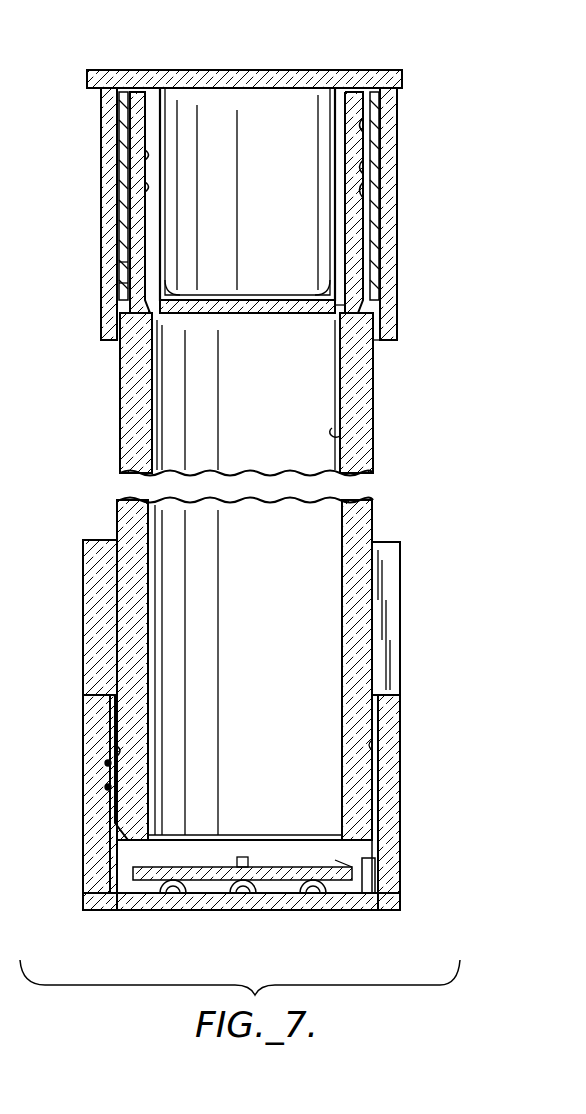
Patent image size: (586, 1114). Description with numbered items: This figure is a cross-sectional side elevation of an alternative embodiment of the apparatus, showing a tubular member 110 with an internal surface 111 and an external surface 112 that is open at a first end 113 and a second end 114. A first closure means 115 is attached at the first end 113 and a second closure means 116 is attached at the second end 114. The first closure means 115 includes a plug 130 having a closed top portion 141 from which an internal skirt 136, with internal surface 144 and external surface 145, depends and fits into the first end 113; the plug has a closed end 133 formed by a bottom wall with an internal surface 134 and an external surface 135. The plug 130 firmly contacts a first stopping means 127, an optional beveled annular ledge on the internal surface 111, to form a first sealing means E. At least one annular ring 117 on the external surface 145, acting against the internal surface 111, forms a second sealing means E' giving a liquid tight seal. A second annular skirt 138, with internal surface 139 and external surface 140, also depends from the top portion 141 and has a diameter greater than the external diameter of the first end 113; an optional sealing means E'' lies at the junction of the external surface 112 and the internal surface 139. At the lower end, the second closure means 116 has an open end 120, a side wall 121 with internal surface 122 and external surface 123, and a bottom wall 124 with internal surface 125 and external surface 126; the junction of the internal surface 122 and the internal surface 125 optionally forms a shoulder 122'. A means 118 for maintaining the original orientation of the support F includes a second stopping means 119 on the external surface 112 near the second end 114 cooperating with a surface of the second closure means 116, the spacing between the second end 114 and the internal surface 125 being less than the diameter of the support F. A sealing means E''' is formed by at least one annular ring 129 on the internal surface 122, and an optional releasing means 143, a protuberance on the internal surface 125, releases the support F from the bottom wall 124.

The tubular member 110 is at (118, 437).
The internal surface 111 is at (342, 432).
The external surface 112 is at (375, 415).
The first end 113 is at (368, 95).
The second end 114 is at (175, 843).
The first closure means 115 is at (101, 212).
The second closure means 116 is at (100, 782).
The annular ring 117 is at (140, 190).
The means for maintaining the original orientation of support 118 is at (403, 672).
The second stopping means 119 is at (106, 697).
The open end 120 is at (108, 723).
The side wall 121 is at (403, 748).
The internal surface 122 is at (416, 791).
The shoulder 122' is at (417, 871).
The external surface 123 is at (400, 778).
The bottom wall 124 is at (172, 906).
The internal surface 125 is at (355, 882).
The external surface 126 is at (328, 900).
The first stopping means 127 is at (350, 300).
The annular ring 129 is at (108, 787).
The plug 130 is at (148, 125).
The closed end 133 is at (215, 318).
The internal surface 134 is at (300, 295).
The external surface 135 is at (354, 316).
The internal skirt 136 is at (150, 158).
The second annular skirt 138 is at (99, 139).
The internal surface 139 is at (123, 283).
The external surface 140 is at (123, 275).
The top portion 141 is at (118, 66).
The releasing means 143 is at (245, 898).
The internal surface 144 is at (333, 105).
The external surface 145 is at (352, 113).
The first sealing means E is at (389, 302).
The second sealing means E' is at (404, 179).
The optional sealing means E'' is at (407, 126).
The sealing means E''' is at (66, 757).
The support F is at (340, 862).